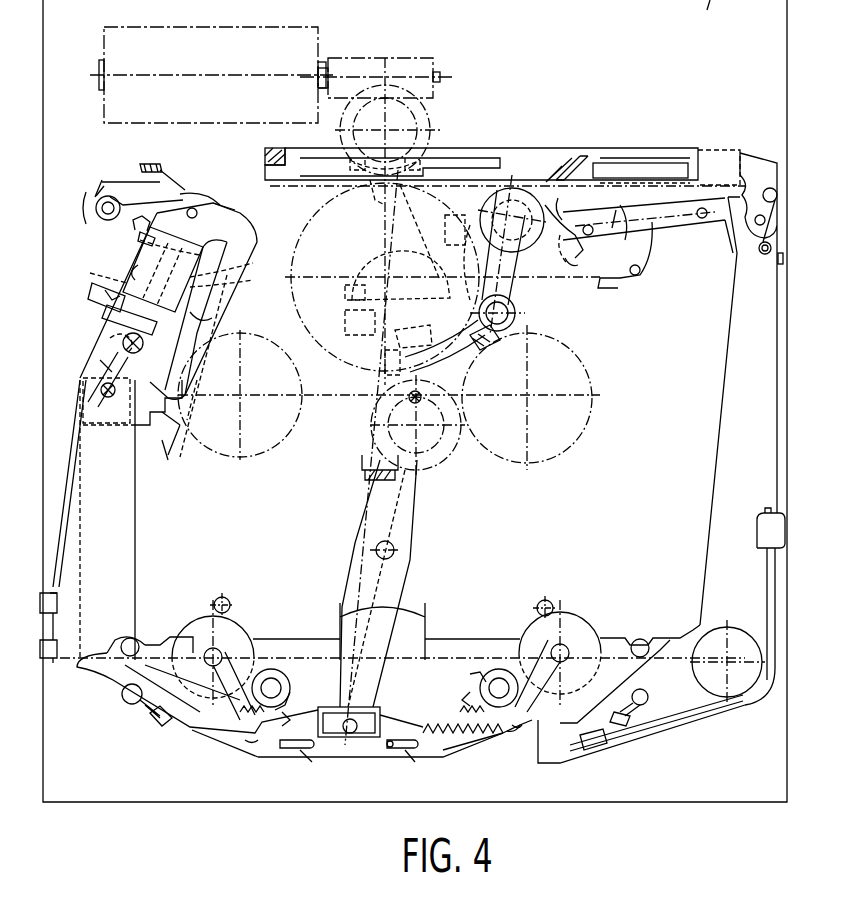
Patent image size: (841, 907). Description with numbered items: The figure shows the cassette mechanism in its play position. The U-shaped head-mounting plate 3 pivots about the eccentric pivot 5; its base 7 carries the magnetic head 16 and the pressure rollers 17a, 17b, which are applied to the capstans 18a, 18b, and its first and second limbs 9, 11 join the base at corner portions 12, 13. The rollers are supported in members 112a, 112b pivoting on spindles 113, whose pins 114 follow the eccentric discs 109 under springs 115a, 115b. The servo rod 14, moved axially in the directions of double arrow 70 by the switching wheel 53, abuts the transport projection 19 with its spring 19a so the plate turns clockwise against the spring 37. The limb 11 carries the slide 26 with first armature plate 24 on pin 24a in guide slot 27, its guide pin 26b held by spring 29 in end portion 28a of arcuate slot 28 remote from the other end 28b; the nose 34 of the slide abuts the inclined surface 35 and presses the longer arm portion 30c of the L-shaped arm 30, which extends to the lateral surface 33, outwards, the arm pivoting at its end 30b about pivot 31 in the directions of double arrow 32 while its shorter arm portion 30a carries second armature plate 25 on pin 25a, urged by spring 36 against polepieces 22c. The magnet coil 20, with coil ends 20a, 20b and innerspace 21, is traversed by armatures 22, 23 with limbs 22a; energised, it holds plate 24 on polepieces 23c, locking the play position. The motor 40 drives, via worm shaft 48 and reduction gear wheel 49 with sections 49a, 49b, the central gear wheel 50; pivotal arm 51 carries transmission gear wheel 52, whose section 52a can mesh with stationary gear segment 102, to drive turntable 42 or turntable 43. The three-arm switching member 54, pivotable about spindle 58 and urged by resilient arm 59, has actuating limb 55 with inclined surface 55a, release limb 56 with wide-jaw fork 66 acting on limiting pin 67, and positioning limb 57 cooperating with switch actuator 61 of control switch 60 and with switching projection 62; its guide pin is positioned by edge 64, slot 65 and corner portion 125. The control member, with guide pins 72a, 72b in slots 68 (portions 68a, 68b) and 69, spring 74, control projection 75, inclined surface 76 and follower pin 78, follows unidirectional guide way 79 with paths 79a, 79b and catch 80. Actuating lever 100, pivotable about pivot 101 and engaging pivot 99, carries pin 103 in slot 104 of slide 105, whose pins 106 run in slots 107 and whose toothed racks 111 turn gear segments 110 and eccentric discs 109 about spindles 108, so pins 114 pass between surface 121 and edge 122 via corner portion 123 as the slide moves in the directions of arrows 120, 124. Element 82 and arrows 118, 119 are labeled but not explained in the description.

The head-mounting plate 3 is at (576, 761).
The eccentric pivot 5 is at (733, 640).
The base 7 is at (473, 637).
The first limb 9 is at (713, 522).
The second limb 11 is at (135, 557).
The corner portion 12 is at (683, 641).
The corner portion 13 is at (135, 622).
The servo rod 14 is at (670, 156).
The magnetic head 16 is at (410, 607).
The pressure roller 17a is at (530, 633).
The pressure roller 17b is at (240, 630).
The capstan 18a is at (551, 601).
The capstan 18b is at (229, 600).
The transport projection 19 is at (756, 156).
The spring 19a is at (764, 210).
The magnet coil 20 is at (128, 282).
The coil end 20a is at (118, 273).
The coil end 20b is at (122, 252).
The innerspace 21 is at (152, 292).
The armature 22 is at (92, 276).
The armature limb 22a is at (236, 288).
The polepieces 22c is at (134, 240).
The armature 23 is at (222, 305).
The polepieces 23c is at (100, 298).
The first armature plate 24 is at (104, 318).
The pin 24a is at (115, 338).
The second armature plate 25 is at (225, 205).
The pin 25a is at (192, 208).
The slide 26 is at (152, 428).
The guide pin 26b is at (100, 362).
The guide slot 27 is at (145, 372).
The arcuate slot 28 is at (120, 405).
The end portion 28a is at (125, 355).
The other end 28b is at (113, 426).
The spring 29 is at (80, 380).
The arm 30 is at (244, 236).
The shorter arm portion 30a is at (232, 217).
The end 30b is at (128, 194).
The longer arm portion 30c is at (179, 444).
The pivot 31 is at (104, 186).
The double arrow 32 is at (86, 192).
The lateral surface 33 is at (181, 424).
The nose 34 is at (174, 388).
The inclined surface 35 is at (165, 458).
The spring 36 is at (163, 170).
The spring 37 is at (655, 733).
The motor 40 is at (203, 42).
The turntable 42 is at (574, 364).
The turntable 43 is at (283, 362).
The worm shaft 48 is at (379, 68).
The reduction gear wheel 49 is at (432, 128).
The wheel section 49a is at (420, 141).
The wheel section 49b is at (420, 103).
The central gear wheel 50 is at (308, 228).
The pivotal arm 51 is at (382, 358).
The transmission gear wheel 52 is at (378, 412).
The gear wheel section 52a is at (440, 460).
The switching wheel 53 is at (490, 204).
The switching member 54 is at (516, 292).
The actuating limb 55 is at (494, 278).
The inclined surface 55a is at (504, 262).
The release limb 56 is at (350, 290).
The positioning limb 57 is at (435, 249).
The spindle 58 is at (516, 315).
The resilient arm 59 is at (486, 347).
The control switch 60 is at (450, 246).
The switch actuator 61 is at (435, 198).
The switching projection 62 is at (368, 198).
The edge 64 is at (306, 170).
The slot 65 is at (493, 157).
The wide-jaw fork 66 is at (350, 315).
The limiting pin 67 is at (424, 347).
The slot 68 is at (545, 230).
The slot portion 68a is at (577, 254).
The slot portion 68b is at (563, 205).
The slot 69 is at (668, 226).
The double arrow 70 is at (322, 790).
The guide pin 72a is at (592, 236).
The guide pin 72b is at (701, 220).
The spring 74 is at (645, 262).
The control projection 75 is at (731, 232).
The inclined surface 76 is at (572, 258).
The follower pin 78 is at (556, 178).
The unidirectional guide way 79 is at (633, 163).
The path 79a is at (619, 160).
The path 79b is at (630, 188).
The schadow-type catch 80 is at (572, 157).
The stop 82 is at (265, 156).
The pivot 99 is at (432, 372).
The actuating lever 100 is at (410, 537).
The pivot 101 is at (377, 542).
The stationary gear segment 102 is at (368, 476).
The pin 103 is at (351, 740).
The slot 104 is at (382, 712).
The slide 105 is at (443, 750).
The pins 106 is at (344, 761).
The slots 107 is at (365, 766).
The spindles 108 is at (280, 673).
The eccentric discs 109 is at (291, 692).
The gear segments 110 is at (215, 686).
The toothed racks 111 is at (214, 748).
The member 112a is at (610, 635).
The member 112b is at (165, 627).
The spindles 113 is at (123, 640).
The pins 114 is at (246, 740).
The spring 115a is at (650, 697).
The spring 115b is at (122, 700).
The direction arrow 118 is at (625, 240).
The direction arrow 119 is at (616, 210).
The arrow 120 is at (188, 789).
The surface 121 is at (290, 718).
The edge 122 is at (242, 685).
The corner portion 123 is at (240, 712).
The arrow 124 is at (530, 790).
The corner portion 125 is at (352, 146).